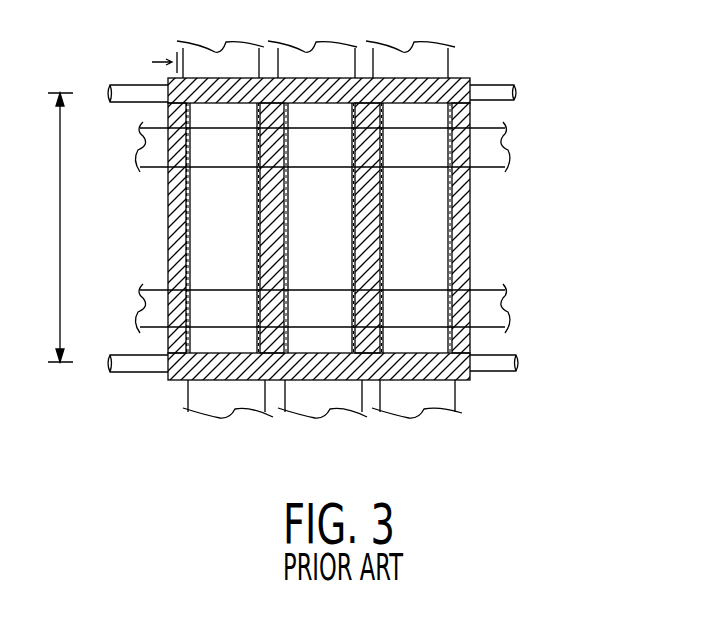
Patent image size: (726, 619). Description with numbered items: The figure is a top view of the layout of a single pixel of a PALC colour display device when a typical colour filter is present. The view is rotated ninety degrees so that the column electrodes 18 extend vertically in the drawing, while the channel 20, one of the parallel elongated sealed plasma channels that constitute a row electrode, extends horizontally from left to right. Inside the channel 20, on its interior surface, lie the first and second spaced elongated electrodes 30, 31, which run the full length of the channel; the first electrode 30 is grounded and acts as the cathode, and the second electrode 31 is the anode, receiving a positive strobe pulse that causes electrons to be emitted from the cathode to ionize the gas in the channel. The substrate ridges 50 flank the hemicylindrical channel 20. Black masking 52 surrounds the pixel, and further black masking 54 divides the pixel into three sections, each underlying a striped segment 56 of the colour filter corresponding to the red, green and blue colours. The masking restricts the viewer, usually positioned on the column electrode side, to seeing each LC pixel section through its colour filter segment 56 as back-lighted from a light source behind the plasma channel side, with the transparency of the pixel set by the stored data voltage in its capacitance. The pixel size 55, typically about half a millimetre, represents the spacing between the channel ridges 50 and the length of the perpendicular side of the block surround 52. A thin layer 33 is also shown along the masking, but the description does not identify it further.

The column electrodes 18 is at (418, 397).
The channel 20 is at (512, 256).
The first electrode 30 is at (140, 304).
The second electrode 31 is at (140, 144).
The insulating layer 33 is at (185, 247).
The substrate ridges 50 is at (492, 87).
The black masking 52 is at (218, 78).
The black masking 54 is at (352, 185).
The pixel size 55 is at (60, 222).
The striped segment of colour filter 56 is at (425, 280).